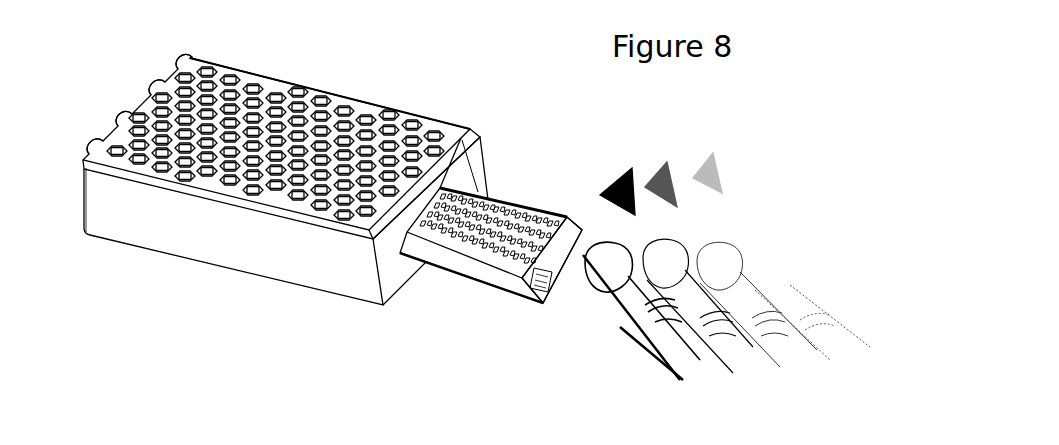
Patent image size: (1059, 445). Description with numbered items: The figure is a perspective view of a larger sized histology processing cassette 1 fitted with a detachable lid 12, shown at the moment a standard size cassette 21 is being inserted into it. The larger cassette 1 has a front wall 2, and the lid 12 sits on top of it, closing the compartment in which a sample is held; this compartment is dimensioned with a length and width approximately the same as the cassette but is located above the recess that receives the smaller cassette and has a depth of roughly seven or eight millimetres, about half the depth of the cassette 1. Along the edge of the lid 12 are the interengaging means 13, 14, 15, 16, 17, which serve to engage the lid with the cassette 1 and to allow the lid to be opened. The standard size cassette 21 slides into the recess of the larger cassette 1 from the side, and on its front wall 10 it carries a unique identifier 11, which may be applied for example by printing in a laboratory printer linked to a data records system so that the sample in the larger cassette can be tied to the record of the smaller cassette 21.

The histology processing cassette 1 is at (295, 268).
The front wall 2 is at (467, 168).
The front wall 10 is at (563, 270).
The unique identifier 11 is at (580, 236).
The detachable lid 12 is at (443, 137).
The interengaging means 13 is at (428, 185).
The interengaging means 14 is at (95, 157).
The interengaging means 15 is at (128, 127).
The interengaging means 16 is at (160, 92).
The interengaging means 17 is at (187, 67).
The standard size cassette 21 is at (480, 278).